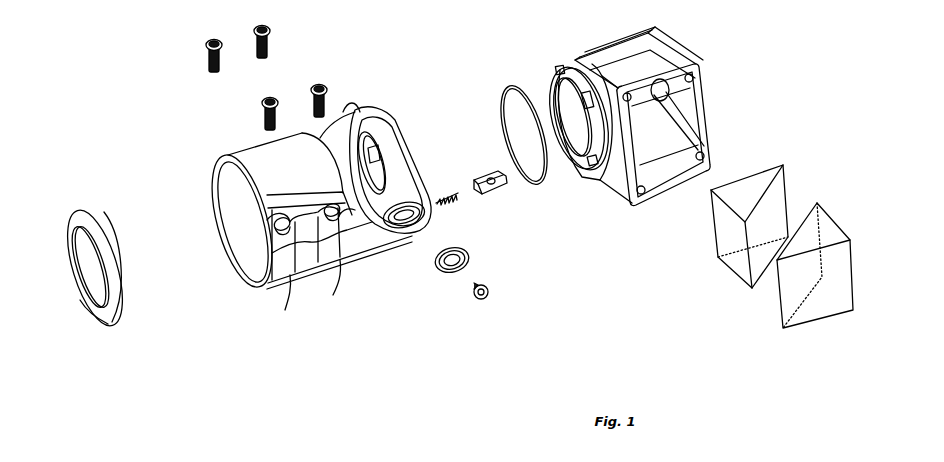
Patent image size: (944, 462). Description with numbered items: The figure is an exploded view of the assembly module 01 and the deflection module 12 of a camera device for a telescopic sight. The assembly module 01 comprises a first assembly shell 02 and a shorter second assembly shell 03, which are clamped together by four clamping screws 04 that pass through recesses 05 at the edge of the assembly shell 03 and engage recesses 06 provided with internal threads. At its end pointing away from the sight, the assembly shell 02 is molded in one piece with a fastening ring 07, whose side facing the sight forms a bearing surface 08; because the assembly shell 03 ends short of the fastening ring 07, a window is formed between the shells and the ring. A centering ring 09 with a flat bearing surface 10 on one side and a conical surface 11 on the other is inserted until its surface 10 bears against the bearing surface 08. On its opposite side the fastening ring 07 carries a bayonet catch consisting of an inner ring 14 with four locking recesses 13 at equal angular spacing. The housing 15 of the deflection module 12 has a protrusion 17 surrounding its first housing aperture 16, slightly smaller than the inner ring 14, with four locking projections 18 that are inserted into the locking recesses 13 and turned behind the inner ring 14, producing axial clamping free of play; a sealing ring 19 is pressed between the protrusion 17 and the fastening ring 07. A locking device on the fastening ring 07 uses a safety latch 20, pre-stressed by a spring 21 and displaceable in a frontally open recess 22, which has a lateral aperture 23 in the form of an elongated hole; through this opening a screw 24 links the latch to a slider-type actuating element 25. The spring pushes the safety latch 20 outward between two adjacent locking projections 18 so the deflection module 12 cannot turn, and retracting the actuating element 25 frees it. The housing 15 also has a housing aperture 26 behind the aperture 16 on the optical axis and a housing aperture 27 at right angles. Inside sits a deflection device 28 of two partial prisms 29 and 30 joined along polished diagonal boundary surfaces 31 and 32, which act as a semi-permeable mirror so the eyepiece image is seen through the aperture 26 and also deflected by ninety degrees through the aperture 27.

The assembly module 01 is at (389, 312).
The first assembly shell 02 is at (256, 288).
The second assembly shell 03 is at (244, 153).
The clamping screws 04 is at (314, 100).
The recesses 05 is at (324, 212).
The recesses provided with internal threads 06 is at (340, 262).
The fastening ring 07 is at (394, 112).
The bearing surface 08 is at (357, 116).
The centering ring 09 is at (132, 322).
The flat bearing surface 10 is at (97, 215).
The conical surface 11 is at (93, 321).
The deflection module 12 is at (708, 45).
The locking recesses 13 is at (390, 128).
The inner ring 14 is at (400, 175).
The housing 15 is at (618, 57).
The first housing aperture 16 is at (567, 140).
The protrusion 17 is at (566, 68).
The locking projections 18 is at (562, 92).
The sealing ring 19 is at (500, 103).
The safety latch 20 is at (500, 192).
The spring 21 is at (445, 194).
The recess 22 is at (436, 209).
The lateral aperture 23 is at (400, 245).
The screw 24 is at (483, 300).
The actuating element 25 is at (452, 272).
The housing aperture 26 is at (678, 105).
The housing aperture 27 is at (673, 168).
The deflection device 28 is at (750, 248).
The partial prism 29 is at (742, 260).
The partial prism 30 is at (796, 288).
The diagonal boundary surface 31 is at (757, 236).
The diagonal boundary surface 32 is at (797, 223).